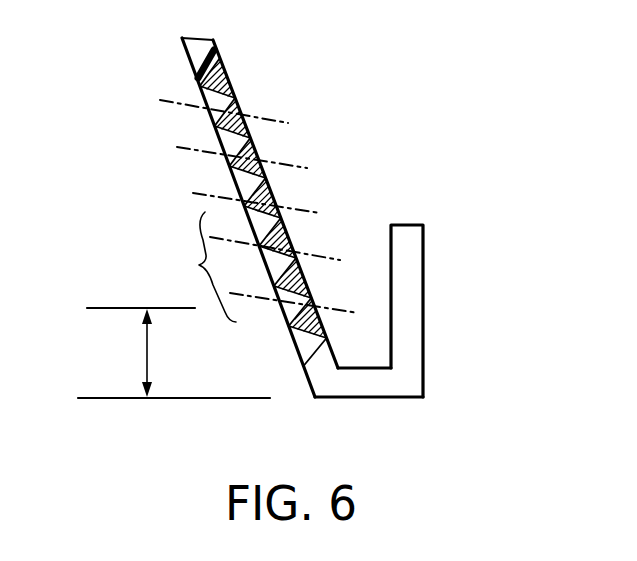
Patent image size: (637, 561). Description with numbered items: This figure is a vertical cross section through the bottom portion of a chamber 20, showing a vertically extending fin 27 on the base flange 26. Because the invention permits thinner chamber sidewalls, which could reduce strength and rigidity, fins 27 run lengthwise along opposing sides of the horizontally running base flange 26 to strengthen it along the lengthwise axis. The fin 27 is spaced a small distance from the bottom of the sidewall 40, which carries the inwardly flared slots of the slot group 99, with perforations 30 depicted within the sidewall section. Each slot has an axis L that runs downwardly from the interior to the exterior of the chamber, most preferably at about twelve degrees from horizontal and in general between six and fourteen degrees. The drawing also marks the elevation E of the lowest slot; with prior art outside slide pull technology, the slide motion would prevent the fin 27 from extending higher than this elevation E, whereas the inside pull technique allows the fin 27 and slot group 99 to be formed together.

The chamber 20 is at (424, 112).
The base flange 26 is at (402, 398).
The fin 27 is at (425, 248).
The reinforcing layers 30 is at (240, 169).
The sidewall 40 is at (217, 78).
The slot group 99 is at (202, 264).
The axis of a slot L is at (281, 120).
The elevation of the lowest slot E is at (174, 353).